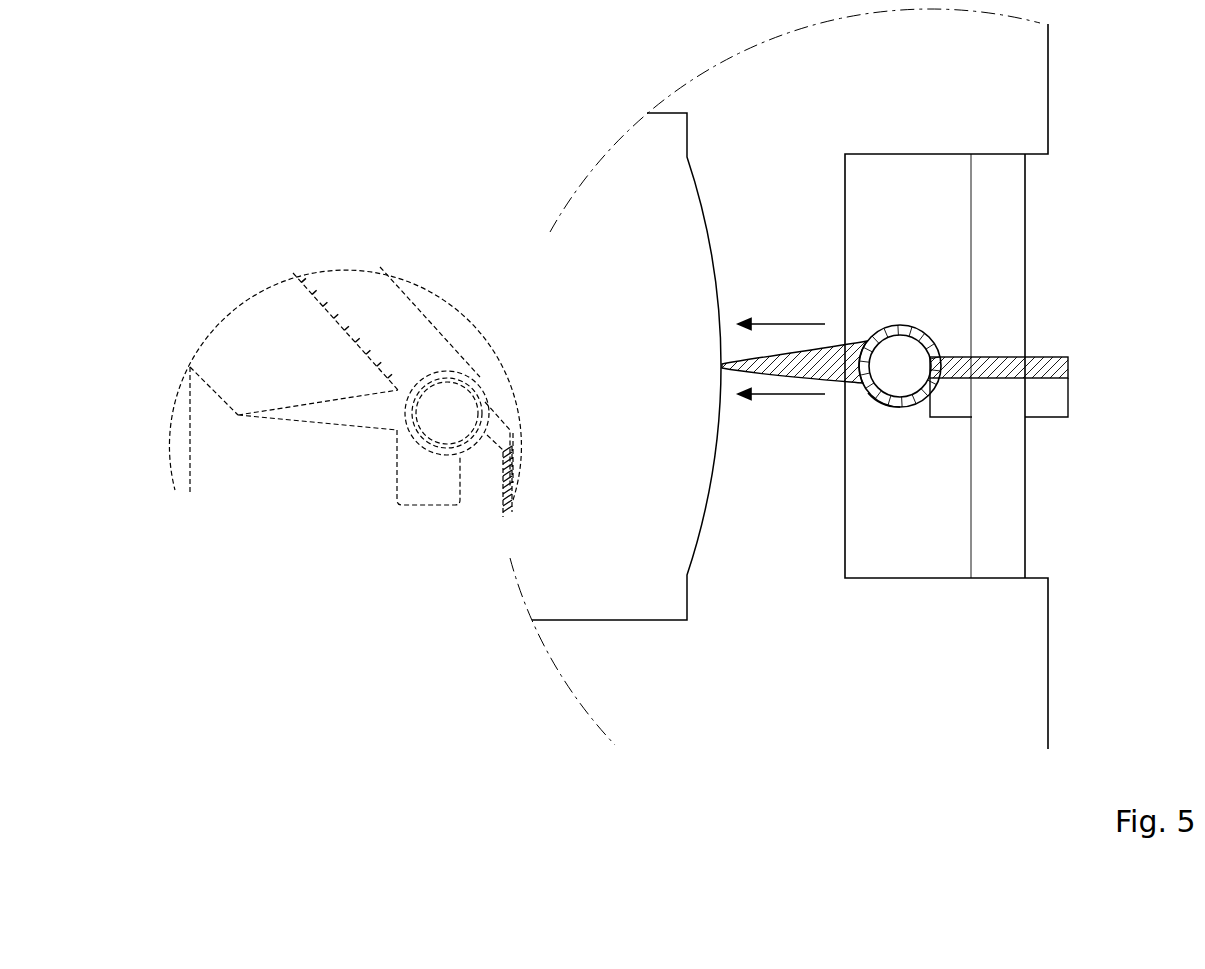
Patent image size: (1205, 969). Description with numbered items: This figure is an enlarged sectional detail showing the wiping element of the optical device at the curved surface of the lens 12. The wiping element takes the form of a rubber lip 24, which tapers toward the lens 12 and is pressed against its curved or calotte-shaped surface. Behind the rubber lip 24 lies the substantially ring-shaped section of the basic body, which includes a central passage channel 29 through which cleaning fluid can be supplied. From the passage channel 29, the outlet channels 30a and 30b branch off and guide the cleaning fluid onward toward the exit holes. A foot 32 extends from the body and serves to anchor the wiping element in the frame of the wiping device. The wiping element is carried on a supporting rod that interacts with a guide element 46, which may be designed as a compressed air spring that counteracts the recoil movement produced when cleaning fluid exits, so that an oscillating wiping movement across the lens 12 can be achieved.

The lens 12 is at (673, 585).
The rubber lip 24 is at (722, 370).
The central passage channel 29 is at (910, 362).
The outlet channel 30a is at (383, 345).
The outlet channel 30b is at (868, 393).
The foot 32 is at (1040, 360).
The guide element 46 is at (1003, 423).